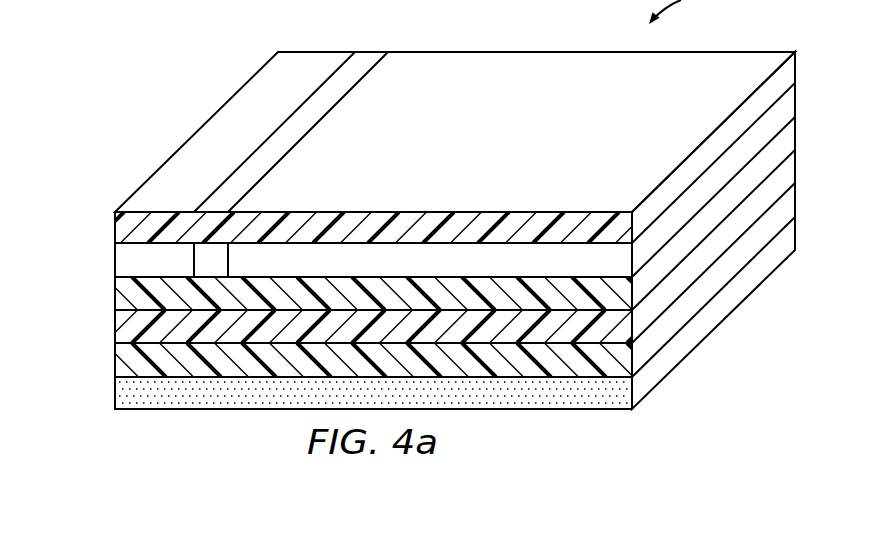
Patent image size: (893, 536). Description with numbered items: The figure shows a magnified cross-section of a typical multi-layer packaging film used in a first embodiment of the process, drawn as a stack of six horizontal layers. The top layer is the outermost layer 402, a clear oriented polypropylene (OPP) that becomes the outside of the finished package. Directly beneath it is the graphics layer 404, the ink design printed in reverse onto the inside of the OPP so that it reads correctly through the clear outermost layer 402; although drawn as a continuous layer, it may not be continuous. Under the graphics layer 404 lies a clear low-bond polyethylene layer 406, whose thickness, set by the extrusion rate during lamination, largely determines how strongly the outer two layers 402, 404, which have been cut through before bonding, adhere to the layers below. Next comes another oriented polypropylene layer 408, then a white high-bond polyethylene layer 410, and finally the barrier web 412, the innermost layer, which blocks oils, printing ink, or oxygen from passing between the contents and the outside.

The outermost layer 402 is at (115, 231).
The graphics layer 404 is at (115, 262).
The low-bond polyethylene layer 406 is at (115, 299).
The oriented polypropylene layer 408 is at (115, 337).
The high-bond polyethylene layer 410 is at (115, 367).
The barrier web 412 is at (115, 401).